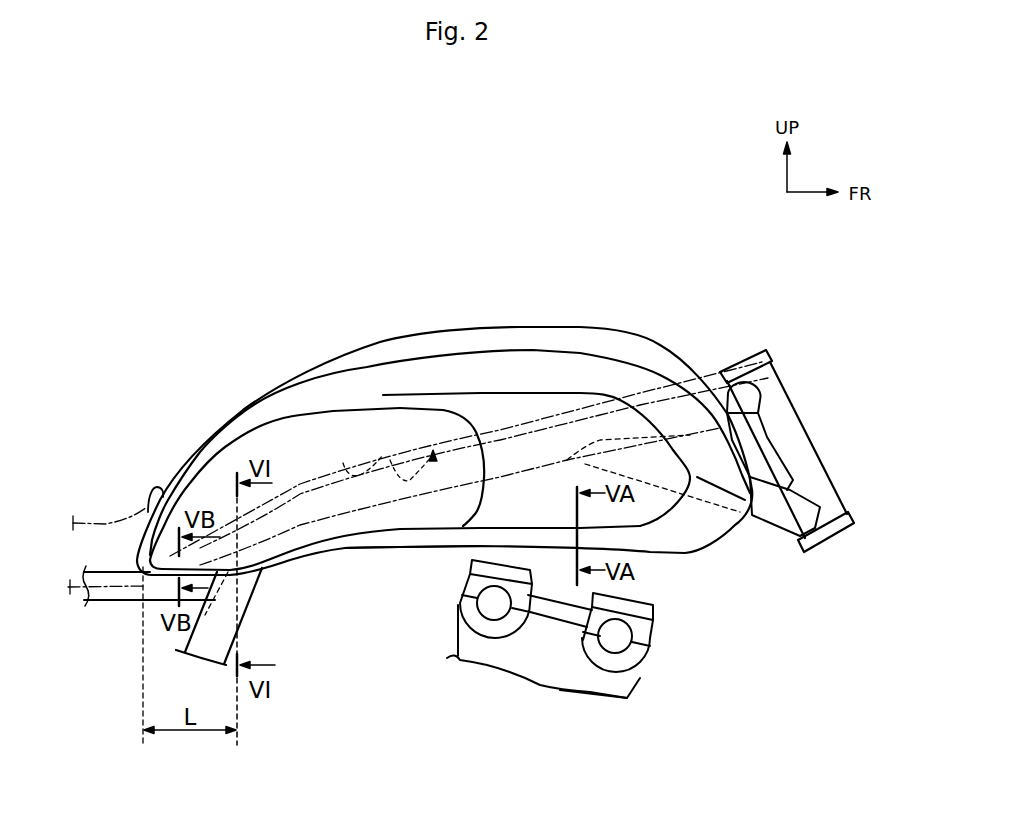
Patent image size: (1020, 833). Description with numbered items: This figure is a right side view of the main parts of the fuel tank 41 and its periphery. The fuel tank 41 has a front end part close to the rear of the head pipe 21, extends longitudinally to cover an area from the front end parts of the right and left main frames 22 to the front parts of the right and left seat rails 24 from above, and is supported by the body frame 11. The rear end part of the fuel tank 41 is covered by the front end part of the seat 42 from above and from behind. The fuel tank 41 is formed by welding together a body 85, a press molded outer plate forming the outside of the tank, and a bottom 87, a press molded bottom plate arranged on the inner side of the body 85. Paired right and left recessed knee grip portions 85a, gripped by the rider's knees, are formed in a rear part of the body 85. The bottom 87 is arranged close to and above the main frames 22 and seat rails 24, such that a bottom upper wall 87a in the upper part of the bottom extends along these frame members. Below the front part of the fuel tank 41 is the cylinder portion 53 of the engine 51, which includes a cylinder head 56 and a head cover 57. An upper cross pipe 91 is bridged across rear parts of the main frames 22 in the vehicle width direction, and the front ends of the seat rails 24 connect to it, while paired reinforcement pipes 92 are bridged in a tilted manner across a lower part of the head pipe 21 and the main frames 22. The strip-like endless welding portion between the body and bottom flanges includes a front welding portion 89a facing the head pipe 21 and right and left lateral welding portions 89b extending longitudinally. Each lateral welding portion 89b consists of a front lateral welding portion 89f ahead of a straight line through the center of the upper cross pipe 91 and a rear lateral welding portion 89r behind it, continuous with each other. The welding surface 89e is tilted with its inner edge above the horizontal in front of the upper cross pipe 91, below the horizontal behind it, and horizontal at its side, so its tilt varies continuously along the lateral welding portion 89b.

The body frame 11 is at (818, 432).
The head pipe 21 is at (778, 398).
The main frames 22 is at (508, 440).
The seat rails 24 is at (113, 594).
The fuel tank 41 is at (619, 322).
The seat 42 is at (78, 515).
The engine 51 is at (519, 661).
The cylinder portion 53 is at (661, 654).
The cylinder head 56 is at (597, 673).
The head cover 57 is at (652, 625).
The body 85 is at (415, 343).
The knee grip portions 85a is at (300, 447).
The bottom 87 is at (387, 453).
The bottom upper wall 87a is at (343, 463).
The front welding portion 89a is at (778, 555).
The lateral welding portions 89b is at (367, 566).
The welding surface 89e is at (230, 607).
The front lateral welding portion 89f is at (445, 550).
The rear lateral welding portion 89r is at (178, 572).
The upper cross pipe 91 is at (250, 580).
The reinforcement pipes 92 is at (767, 510).